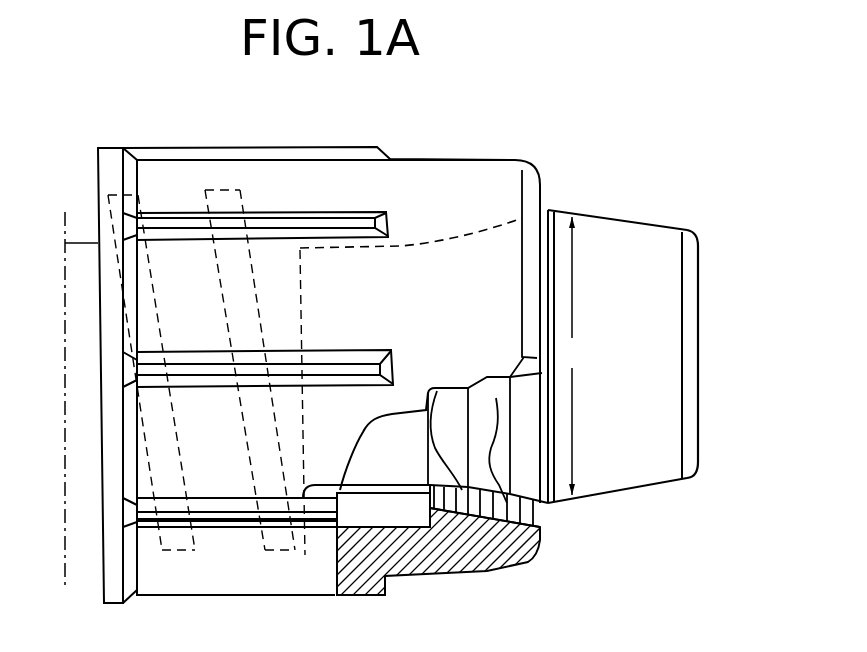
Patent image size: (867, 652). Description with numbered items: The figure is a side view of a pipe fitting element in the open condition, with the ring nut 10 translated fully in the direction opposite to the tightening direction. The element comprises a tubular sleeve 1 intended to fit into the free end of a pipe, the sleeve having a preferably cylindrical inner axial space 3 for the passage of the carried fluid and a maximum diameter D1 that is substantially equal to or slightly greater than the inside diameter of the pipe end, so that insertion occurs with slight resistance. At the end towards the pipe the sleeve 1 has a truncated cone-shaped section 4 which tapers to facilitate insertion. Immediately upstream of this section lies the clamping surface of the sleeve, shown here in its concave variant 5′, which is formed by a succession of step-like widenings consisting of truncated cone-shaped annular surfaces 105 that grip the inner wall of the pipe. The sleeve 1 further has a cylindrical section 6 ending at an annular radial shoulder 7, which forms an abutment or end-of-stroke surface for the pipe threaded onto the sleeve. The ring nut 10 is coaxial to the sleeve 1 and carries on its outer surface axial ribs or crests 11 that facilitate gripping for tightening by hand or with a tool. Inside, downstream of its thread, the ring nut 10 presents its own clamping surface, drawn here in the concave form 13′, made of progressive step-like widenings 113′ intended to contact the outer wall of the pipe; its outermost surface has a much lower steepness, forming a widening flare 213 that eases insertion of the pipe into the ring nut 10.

The ring nut 10 is at (203, 147).
The axial ribs or crests 11 is at (341, 208).
The annular radial shoulder 7 is at (312, 428).
The truncated cone-shaped annular surfaces 105 is at (528, 404).
The cylindrical section 6 is at (385, 450).
The concave clamping surface of the ring nut 13′ is at (436, 392).
The concave step-like widenings 113′ is at (496, 398).
The tubular sleeve 1 is at (360, 493).
The widening flare 213 is at (545, 524).
The concave clamping surface of the sleeve 5′ is at (500, 498).
The truncated cone-shaped section 4 is at (657, 226).
The inner axial space 3 is at (699, 326).
The maximum diameter D1 is at (579, 356).